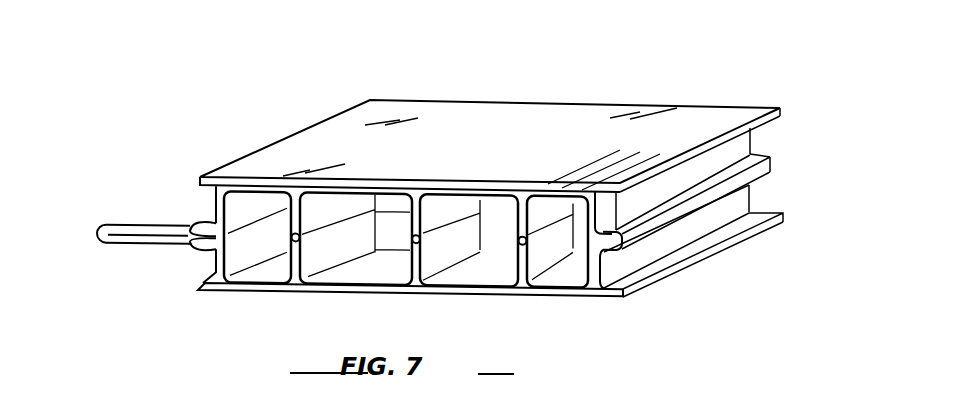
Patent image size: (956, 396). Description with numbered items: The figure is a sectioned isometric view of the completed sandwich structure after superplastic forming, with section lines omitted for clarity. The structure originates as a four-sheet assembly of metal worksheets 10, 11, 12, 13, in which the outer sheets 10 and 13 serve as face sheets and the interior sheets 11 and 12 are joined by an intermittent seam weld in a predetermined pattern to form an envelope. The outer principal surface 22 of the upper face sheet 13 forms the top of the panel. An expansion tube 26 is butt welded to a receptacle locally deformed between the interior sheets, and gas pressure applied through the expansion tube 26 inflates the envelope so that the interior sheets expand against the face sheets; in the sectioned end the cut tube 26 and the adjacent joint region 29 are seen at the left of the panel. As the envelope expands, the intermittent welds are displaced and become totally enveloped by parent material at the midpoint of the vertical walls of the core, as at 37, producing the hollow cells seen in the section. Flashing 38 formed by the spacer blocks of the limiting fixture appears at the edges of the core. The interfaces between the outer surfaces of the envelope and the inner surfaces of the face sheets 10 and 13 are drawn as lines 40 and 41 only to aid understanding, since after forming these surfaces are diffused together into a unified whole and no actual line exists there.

The metal worksheet 10 is at (786, 214).
The interior sheet 11 is at (771, 173).
The interior sheet 12 is at (771, 158).
The face sheet 13 is at (780, 108).
The principal surface 22 is at (589, 124).
The expansion tube 26 is at (128, 227).
The lower coupling lobe 29 is at (196, 252).
The weld location in vertical wall 37 is at (428, 224).
The flashing 38 is at (210, 224).
The interface line 40 is at (366, 291).
The interface line 41 is at (378, 177).